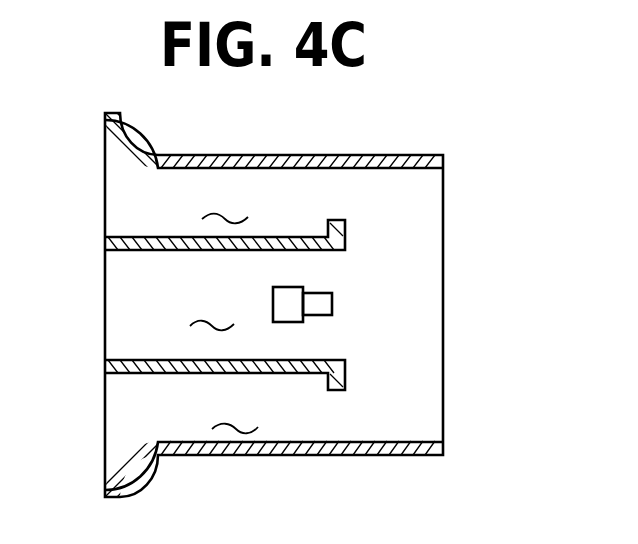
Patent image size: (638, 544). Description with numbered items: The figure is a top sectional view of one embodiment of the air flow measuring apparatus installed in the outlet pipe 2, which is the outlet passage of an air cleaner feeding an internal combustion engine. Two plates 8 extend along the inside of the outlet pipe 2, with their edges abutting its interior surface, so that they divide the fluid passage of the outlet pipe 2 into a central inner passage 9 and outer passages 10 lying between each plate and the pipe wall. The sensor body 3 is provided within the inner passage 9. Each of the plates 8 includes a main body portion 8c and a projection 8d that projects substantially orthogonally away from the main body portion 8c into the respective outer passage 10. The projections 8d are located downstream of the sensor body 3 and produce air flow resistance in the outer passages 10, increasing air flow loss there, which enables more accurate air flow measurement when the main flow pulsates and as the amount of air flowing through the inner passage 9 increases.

The outlet pipe 2 is at (410, 159).
The sensor body 3 is at (322, 305).
The plates 8 is at (198, 309).
The main body portion 8c is at (175, 243).
The projection 8d is at (340, 220).
The inner passage 9 is at (212, 307).
The outer passages 10 is at (230, 308).